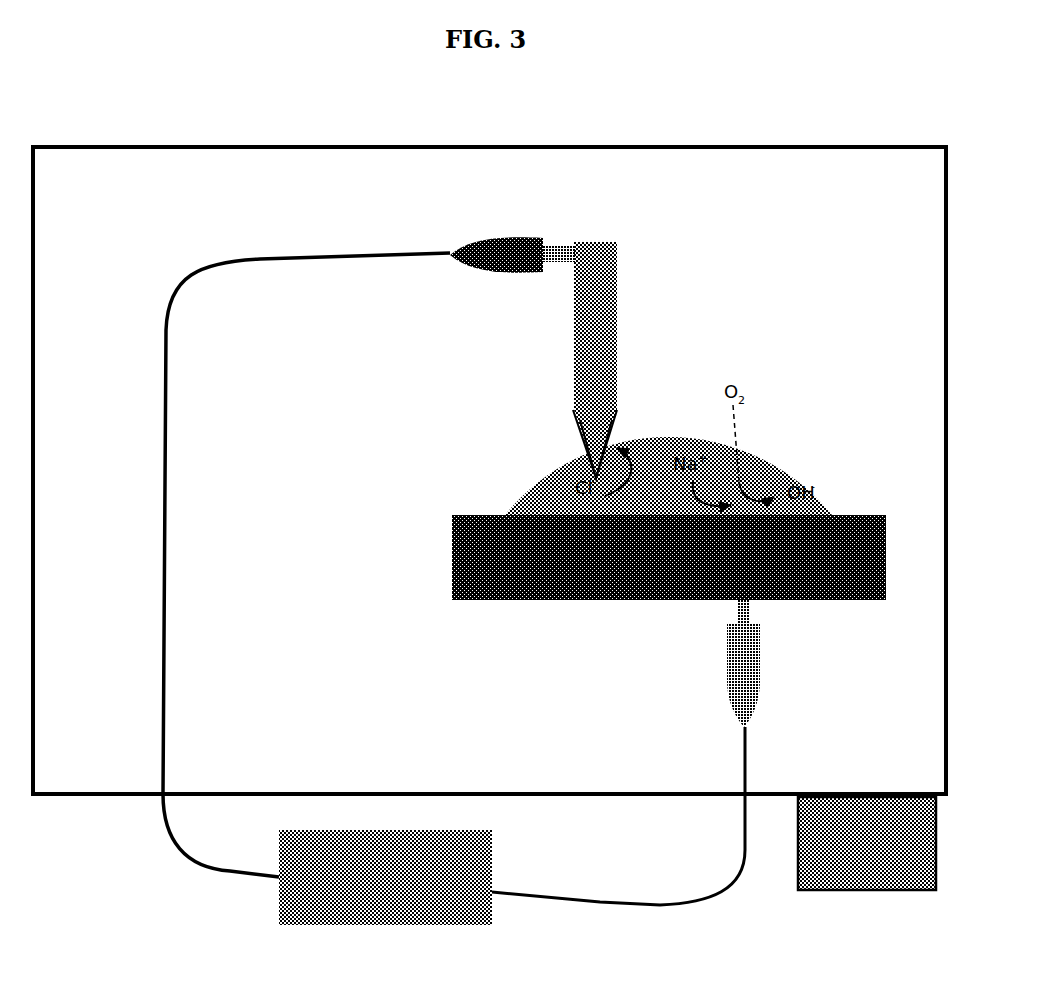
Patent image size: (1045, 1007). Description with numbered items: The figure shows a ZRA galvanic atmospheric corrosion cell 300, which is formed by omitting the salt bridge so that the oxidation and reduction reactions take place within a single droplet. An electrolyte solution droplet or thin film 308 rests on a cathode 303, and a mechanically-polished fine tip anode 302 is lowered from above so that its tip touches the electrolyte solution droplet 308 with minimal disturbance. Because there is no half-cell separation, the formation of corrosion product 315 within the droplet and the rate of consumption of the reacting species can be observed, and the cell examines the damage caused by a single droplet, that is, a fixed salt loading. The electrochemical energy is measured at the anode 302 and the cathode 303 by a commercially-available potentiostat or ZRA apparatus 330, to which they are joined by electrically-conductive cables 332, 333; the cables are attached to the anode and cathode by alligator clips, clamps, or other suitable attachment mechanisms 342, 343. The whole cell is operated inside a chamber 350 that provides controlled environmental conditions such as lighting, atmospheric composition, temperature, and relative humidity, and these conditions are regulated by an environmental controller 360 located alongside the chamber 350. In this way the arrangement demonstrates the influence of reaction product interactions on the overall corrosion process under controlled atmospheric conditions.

The ZRA galvanic atmospheric corrosion cell 300 is at (179, 230).
The anode 302 is at (619, 298).
The cathode 303 is at (613, 604).
The electrolyte solution droplet 308 is at (779, 456).
The corrosion product 315 is at (582, 428).
The potentiostat or ZRA apparatus 330 is at (385, 877).
The electrically-conductive cable 332 is at (403, 260).
The electrically-conductive cable 333 is at (752, 748).
The attachment mechanism 342 is at (553, 264).
The attachment mechanism 343 is at (754, 608).
The chamber 350 is at (100, 802).
The environmental controller 360 is at (867, 843).